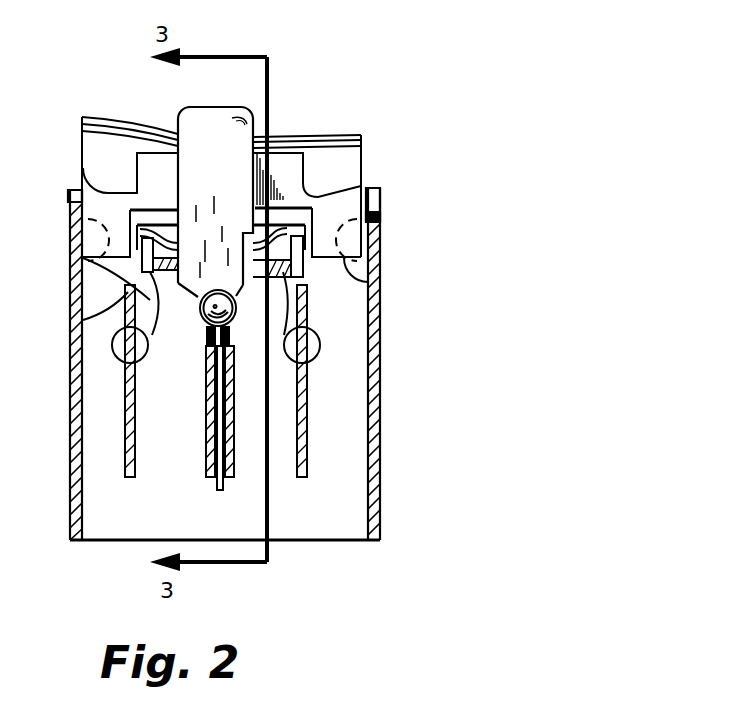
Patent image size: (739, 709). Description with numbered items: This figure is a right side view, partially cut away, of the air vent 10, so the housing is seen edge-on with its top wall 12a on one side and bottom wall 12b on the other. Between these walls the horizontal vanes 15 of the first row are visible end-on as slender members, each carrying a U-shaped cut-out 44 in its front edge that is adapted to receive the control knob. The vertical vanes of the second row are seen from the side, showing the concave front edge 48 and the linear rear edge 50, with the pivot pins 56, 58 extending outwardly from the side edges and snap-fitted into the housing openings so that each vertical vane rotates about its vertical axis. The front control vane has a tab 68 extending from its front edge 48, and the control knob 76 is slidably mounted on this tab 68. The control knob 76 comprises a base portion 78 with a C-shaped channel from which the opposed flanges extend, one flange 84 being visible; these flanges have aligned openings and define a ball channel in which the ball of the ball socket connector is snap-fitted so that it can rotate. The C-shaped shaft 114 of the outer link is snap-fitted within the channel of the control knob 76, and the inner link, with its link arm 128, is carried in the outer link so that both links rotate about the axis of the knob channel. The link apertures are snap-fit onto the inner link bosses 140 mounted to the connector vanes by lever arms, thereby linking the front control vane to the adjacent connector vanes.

The air vent 10 is at (497, 106).
The top wall 12a is at (382, 440).
The bottom wall 12b is at (70, 488).
The horizontal vanes 15 is at (138, 462).
The U-shaped cut-out 44 is at (137, 318).
The front edge 48 is at (83, 167).
The rear edge 50 is at (197, 217).
The pivot pin 56 is at (70, 234).
The pivot pin 58 is at (375, 243).
The tab 68 is at (283, 150).
The control knob 76 is at (250, 120).
The base portion 78 is at (130, 222).
The flange 84 is at (236, 310).
The C-shaped shaft 114 is at (200, 340).
The link arm 128 is at (83, 320).
The inner link bosses 140 is at (282, 238).